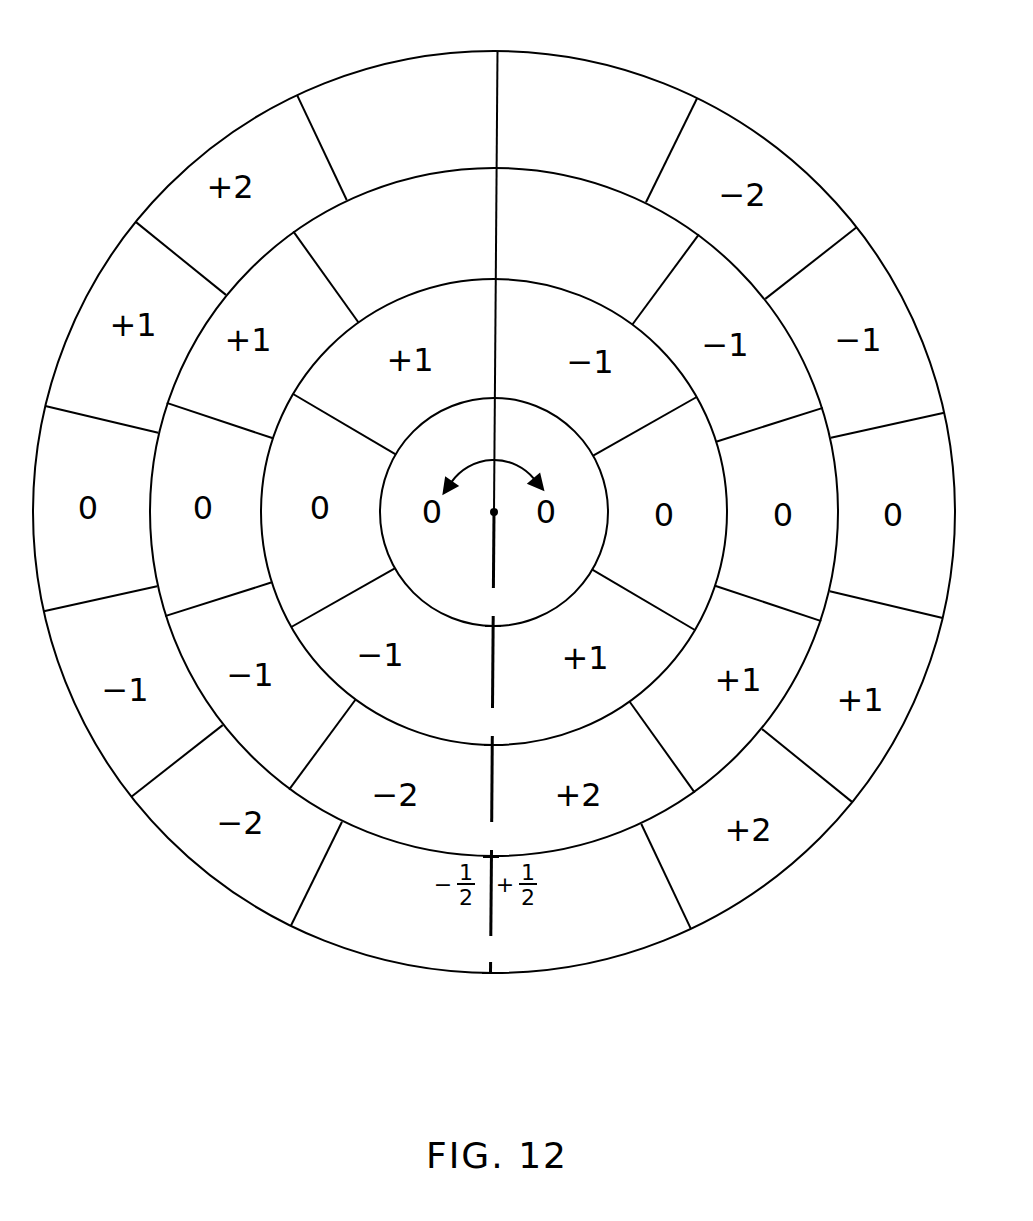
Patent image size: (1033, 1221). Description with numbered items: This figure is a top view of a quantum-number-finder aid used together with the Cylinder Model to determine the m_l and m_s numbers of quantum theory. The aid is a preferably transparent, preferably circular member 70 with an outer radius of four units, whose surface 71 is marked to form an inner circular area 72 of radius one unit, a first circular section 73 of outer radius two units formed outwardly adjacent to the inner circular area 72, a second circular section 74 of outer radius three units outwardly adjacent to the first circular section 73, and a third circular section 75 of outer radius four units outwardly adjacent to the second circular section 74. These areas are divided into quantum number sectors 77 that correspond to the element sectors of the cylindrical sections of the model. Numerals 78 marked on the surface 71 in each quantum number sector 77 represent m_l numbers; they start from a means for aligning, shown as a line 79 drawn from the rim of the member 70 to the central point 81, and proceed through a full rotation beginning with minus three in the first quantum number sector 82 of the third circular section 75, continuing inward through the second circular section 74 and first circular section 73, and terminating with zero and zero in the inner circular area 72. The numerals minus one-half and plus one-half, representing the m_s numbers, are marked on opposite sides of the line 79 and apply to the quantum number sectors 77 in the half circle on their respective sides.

The member 70 is at (225, 890).
The surface 71 is at (166, 798).
The inner circular area 72 is at (522, 428).
The first circular section 73 is at (631, 361).
The second circular section 74 is at (764, 350).
The third circular section 75 is at (880, 380).
The quantum number sectors 77 is at (361, 97).
The numerals 78 is at (354, 238).
The line 79 is at (491, 900).
The central point 81 is at (491, 515).
The first quantum number sector 82 is at (418, 944).